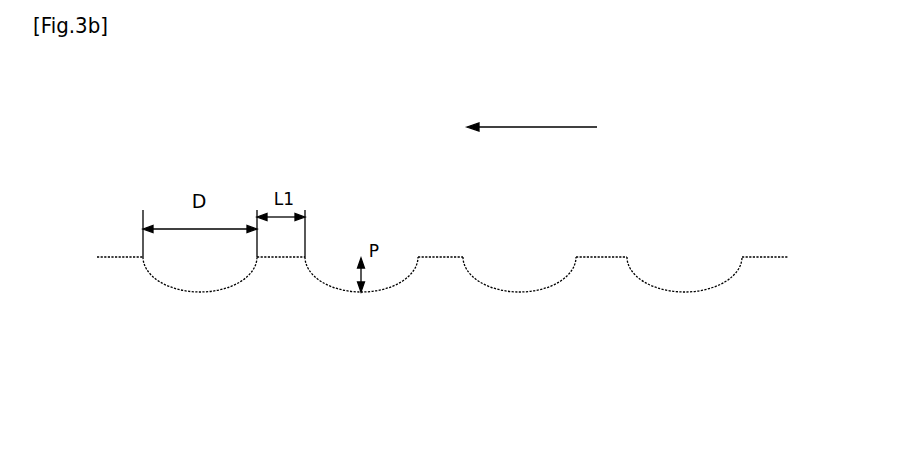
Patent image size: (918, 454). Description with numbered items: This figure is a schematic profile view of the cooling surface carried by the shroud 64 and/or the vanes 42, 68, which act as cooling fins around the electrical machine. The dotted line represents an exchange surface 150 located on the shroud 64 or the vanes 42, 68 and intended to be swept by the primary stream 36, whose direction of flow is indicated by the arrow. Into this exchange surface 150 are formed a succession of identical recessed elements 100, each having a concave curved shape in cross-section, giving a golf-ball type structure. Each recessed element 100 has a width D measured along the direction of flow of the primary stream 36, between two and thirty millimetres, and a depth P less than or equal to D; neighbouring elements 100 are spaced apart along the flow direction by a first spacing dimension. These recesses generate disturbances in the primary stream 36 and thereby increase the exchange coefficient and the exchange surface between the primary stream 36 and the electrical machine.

The primary stream 36 is at (537, 125).
The shroud 64 is at (436, 276).
The vane 42 is at (436, 276).
The vane 68 is at (436, 276).
The recessed element 100 is at (493, 286).
The exchange surface 150 is at (757, 258).